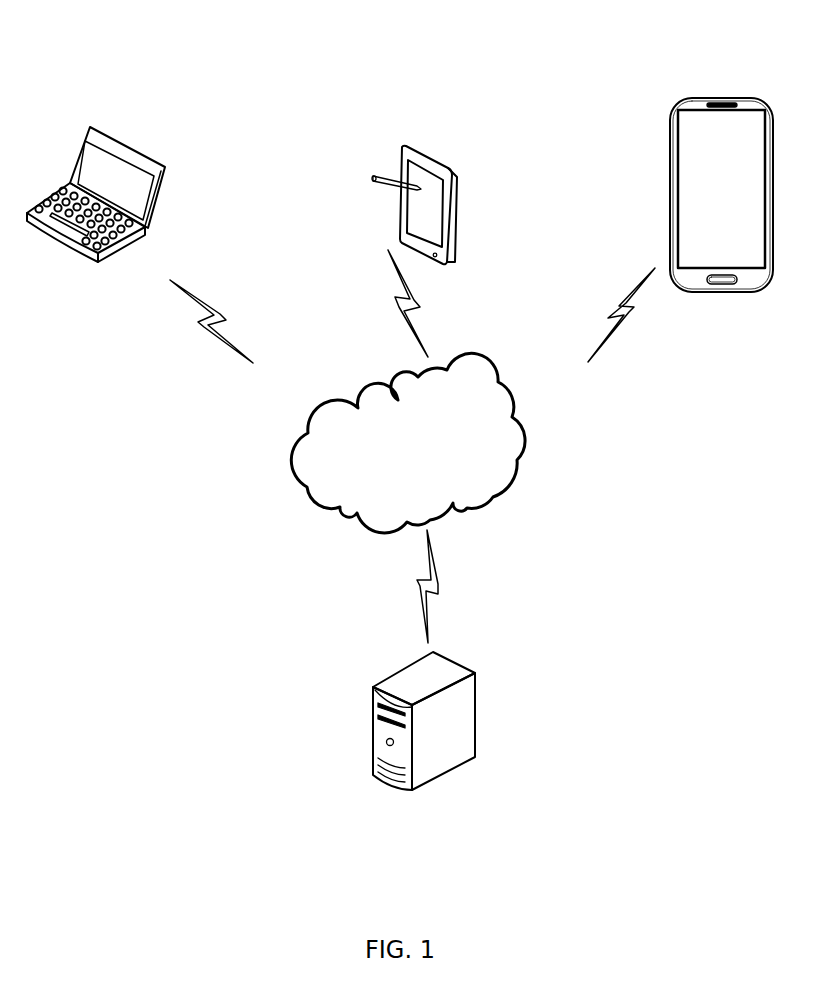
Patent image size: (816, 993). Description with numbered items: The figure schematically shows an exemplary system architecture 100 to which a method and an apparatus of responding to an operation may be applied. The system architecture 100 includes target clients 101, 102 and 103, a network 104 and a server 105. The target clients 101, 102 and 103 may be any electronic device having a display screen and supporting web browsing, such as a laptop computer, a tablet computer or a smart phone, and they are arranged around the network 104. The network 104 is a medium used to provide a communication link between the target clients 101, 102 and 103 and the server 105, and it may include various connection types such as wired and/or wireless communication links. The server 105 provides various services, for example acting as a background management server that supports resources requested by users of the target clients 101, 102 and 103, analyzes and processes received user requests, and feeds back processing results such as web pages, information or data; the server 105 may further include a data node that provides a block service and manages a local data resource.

The system architecture 100 is at (209, 64).
The target client 101 is at (96, 179).
The target client 102 is at (414, 185).
The target client 103 is at (721, 176).
The network 104 is at (408, 443).
The server 105 is at (435, 708).